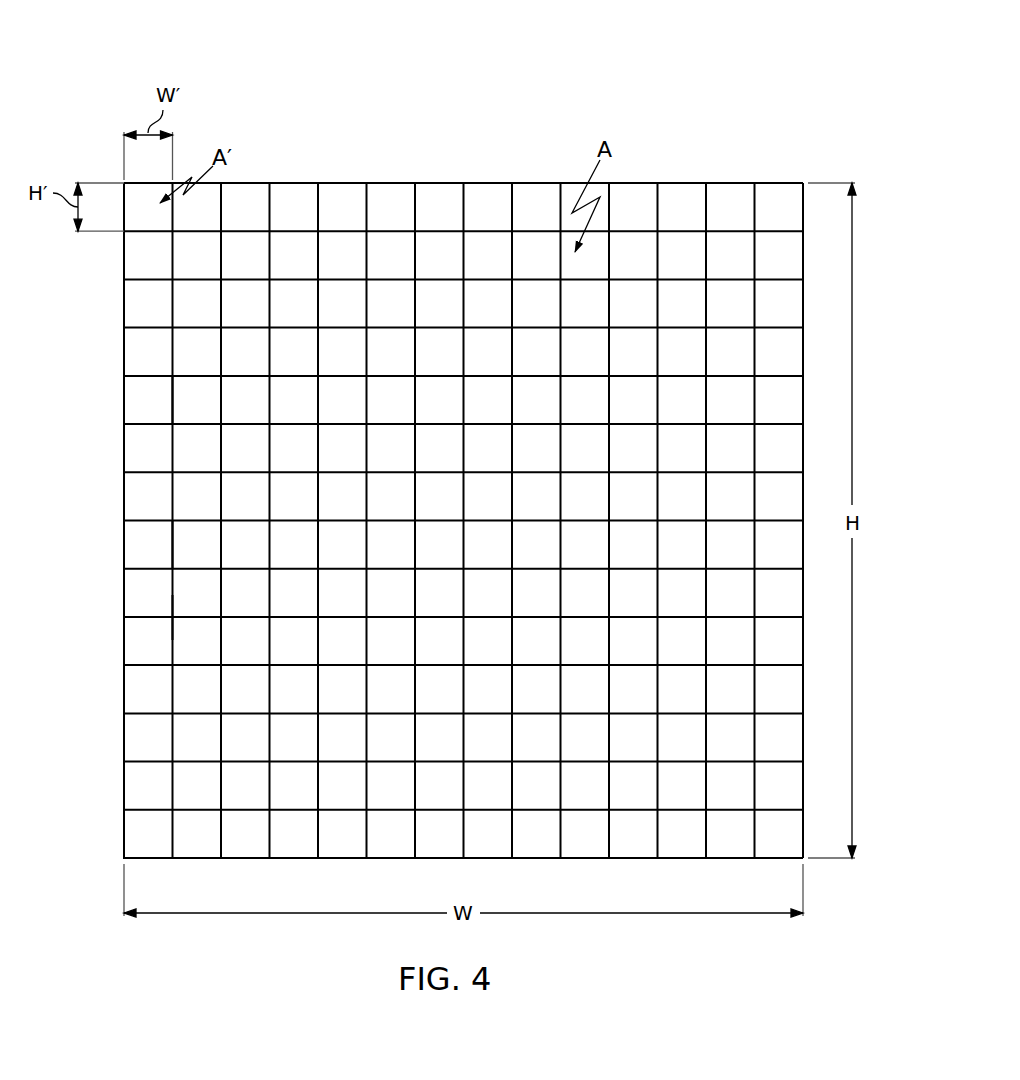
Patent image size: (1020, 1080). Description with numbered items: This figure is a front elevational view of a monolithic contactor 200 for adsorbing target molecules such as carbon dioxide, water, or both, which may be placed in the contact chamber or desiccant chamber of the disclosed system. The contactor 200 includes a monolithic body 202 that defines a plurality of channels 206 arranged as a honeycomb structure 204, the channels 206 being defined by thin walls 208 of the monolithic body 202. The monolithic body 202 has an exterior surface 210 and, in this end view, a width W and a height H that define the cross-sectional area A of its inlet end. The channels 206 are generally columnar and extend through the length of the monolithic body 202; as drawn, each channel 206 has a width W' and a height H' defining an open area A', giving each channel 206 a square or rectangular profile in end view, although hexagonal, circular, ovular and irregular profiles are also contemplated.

The monolithic contactor 200 is at (754, 85).
The monolithic body 202 is at (119, 778).
The honeycomb structure 204 is at (168, 622).
The channels 206 is at (142, 400).
The thin walls 208 is at (148, 423).
The exterior surface 210 is at (678, 182).